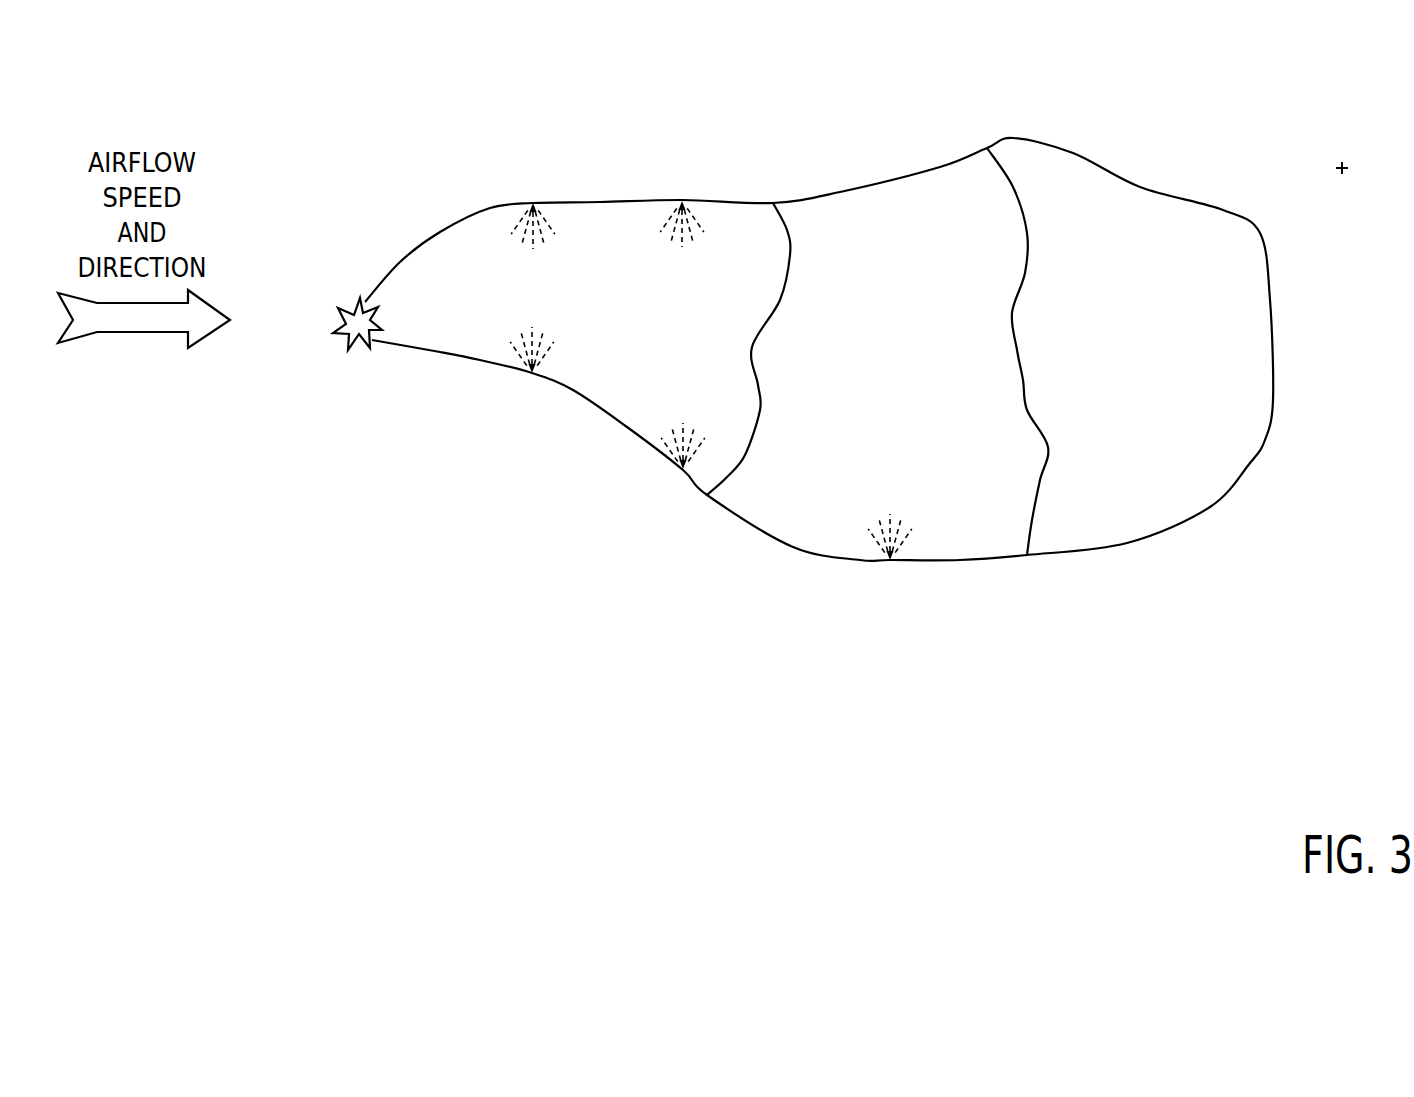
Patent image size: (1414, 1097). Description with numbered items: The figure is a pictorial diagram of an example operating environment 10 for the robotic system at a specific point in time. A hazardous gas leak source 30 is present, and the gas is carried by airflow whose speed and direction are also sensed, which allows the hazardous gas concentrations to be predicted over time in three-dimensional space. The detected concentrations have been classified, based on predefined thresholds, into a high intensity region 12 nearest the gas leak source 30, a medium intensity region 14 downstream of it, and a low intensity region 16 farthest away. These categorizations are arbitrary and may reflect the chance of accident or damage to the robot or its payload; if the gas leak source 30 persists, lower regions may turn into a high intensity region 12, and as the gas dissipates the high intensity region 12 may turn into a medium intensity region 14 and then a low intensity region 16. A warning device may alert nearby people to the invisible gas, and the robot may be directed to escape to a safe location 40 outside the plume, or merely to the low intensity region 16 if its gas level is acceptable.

The environment 10 is at (1112, 68).
The high intensity region 12 is at (519, 288).
The medium intensity region 14 is at (779, 318).
The low intensity region 16 is at (1056, 318).
The gas leak source 30 is at (336, 331).
The safe location 40 is at (1330, 158).